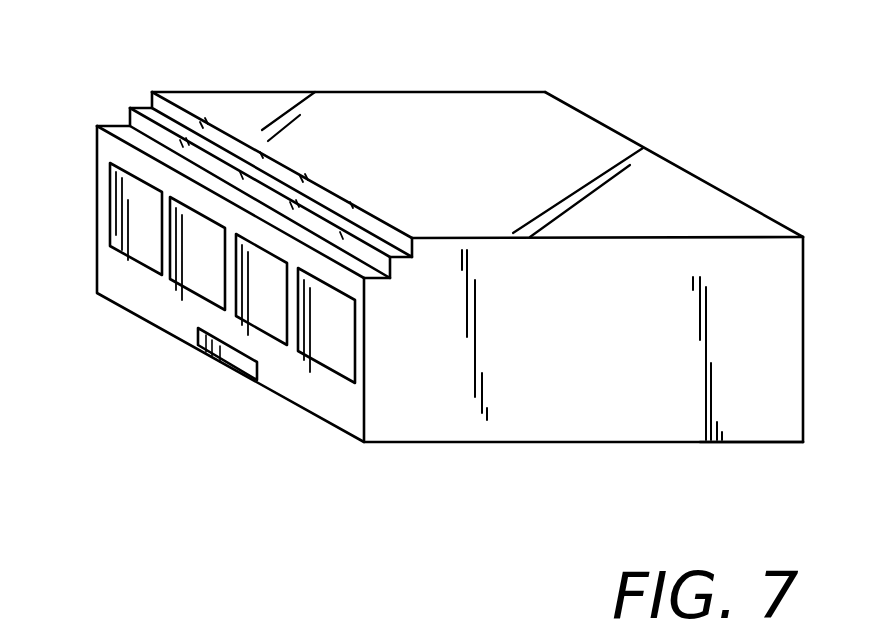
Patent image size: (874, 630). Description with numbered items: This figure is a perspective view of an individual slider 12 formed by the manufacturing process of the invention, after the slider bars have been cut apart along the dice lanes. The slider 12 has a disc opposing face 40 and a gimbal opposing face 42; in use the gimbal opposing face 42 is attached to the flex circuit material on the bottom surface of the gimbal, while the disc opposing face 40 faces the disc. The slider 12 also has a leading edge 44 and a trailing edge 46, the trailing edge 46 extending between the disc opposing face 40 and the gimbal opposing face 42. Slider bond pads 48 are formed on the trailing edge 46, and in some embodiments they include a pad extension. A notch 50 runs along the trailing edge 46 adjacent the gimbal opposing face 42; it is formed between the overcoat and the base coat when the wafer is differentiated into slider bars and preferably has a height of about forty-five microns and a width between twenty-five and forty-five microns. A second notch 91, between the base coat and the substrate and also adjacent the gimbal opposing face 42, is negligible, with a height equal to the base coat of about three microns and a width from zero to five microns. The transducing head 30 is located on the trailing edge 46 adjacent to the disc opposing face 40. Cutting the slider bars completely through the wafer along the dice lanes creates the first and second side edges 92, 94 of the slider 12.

The slider 12 is at (82, 86).
The transducing head 30 is at (247, 362).
The disc opposing face 40 is at (513, 442).
The gimbal opposing face 42 is at (217, 100).
The leading edge 44 is at (803, 288).
The trailing edge 46 is at (108, 150).
The slider bond pads 48 is at (190, 265).
The notch 50 is at (117, 128).
The second notch 91 is at (148, 98).
The first side edge 92 is at (373, 91).
The second side edge 94 is at (740, 423).